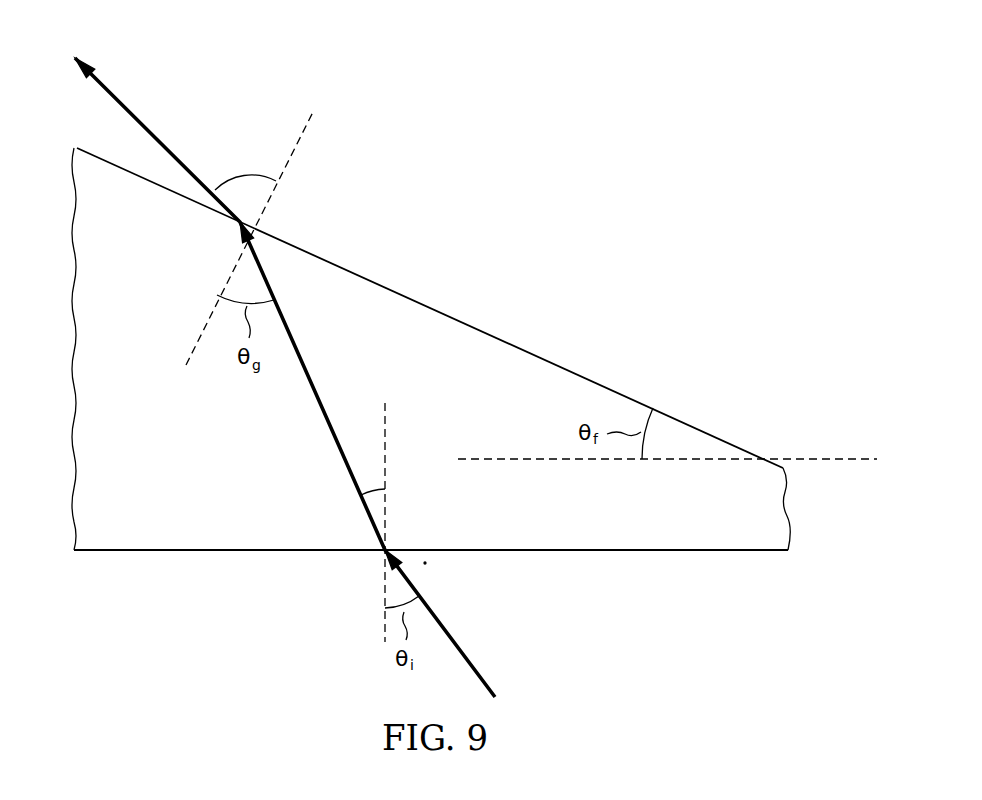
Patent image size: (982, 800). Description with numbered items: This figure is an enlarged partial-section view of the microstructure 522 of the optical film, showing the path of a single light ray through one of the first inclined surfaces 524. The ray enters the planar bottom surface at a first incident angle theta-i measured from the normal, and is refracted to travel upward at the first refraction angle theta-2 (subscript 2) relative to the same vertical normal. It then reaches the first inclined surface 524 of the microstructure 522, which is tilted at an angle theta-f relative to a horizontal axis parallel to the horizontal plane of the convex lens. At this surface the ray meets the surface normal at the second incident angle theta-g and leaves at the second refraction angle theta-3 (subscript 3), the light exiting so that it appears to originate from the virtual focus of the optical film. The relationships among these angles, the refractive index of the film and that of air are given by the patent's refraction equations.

The microstructure 522 is at (74, 299).
The first inclined surface 524 is at (430, 307).
The exit angle θ 3 is at (248, 175).
The refraction angle θ 2 is at (370, 484).